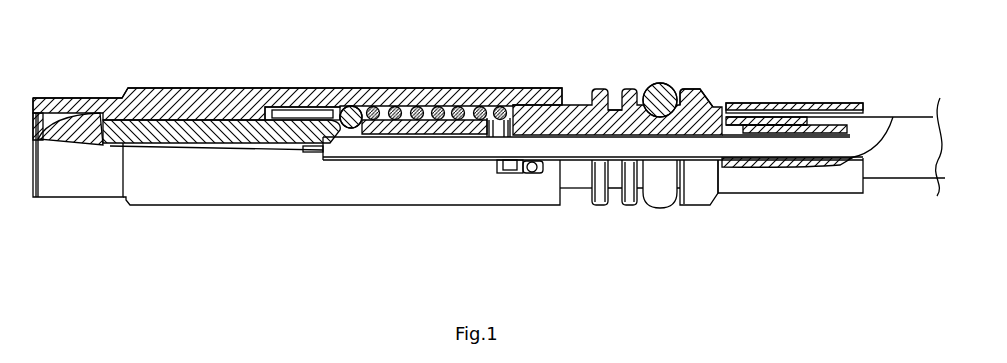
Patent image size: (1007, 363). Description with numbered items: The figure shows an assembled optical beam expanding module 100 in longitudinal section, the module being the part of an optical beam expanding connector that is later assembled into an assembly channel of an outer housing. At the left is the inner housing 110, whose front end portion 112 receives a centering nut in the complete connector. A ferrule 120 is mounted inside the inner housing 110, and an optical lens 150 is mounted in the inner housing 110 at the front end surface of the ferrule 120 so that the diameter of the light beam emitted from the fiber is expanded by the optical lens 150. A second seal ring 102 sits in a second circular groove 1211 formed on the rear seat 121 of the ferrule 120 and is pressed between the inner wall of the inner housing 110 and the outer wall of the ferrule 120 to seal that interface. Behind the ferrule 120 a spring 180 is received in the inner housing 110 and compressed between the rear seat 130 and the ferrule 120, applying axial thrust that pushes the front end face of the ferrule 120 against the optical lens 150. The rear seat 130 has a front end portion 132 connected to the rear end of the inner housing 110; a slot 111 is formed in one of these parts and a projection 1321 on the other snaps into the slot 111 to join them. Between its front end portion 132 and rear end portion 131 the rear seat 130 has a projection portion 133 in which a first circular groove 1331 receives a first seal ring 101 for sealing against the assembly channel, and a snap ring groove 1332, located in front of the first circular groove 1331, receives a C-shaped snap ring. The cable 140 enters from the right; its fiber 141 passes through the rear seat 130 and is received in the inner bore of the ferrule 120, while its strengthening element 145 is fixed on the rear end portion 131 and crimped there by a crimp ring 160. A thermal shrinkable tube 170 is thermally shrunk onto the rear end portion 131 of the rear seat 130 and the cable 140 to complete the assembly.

The optical beam expanding module 100 is at (150, 59).
The first seal ring 101 is at (661, 84).
The second seal ring 102 is at (352, 106).
The inner housing 110 is at (252, 96).
The slot 111 is at (523, 175).
The front end portion 112 is at (82, 178).
The ferrule 120 is at (208, 112).
The rear seat of the ferrule 121 is at (295, 120).
The second circular groove 1211 is at (354, 126).
The rear seat 130 is at (600, 92).
The rear end portion 131 is at (813, 130).
The front end portion 132 is at (540, 118).
The projection 1321 is at (537, 176).
The projection portion 133 is at (693, 192).
The first circular groove 1331 is at (680, 92).
The snap ring groove 1332 is at (616, 90).
The cable 140 is at (900, 166).
The fiber 141 is at (320, 152).
The strengthening element 145 is at (787, 125).
The optical lens 150 is at (77, 130).
The crimp ring 160 is at (778, 119).
The thermal shrinkable tube 170 is at (852, 104).
The spring 180 is at (450, 105).